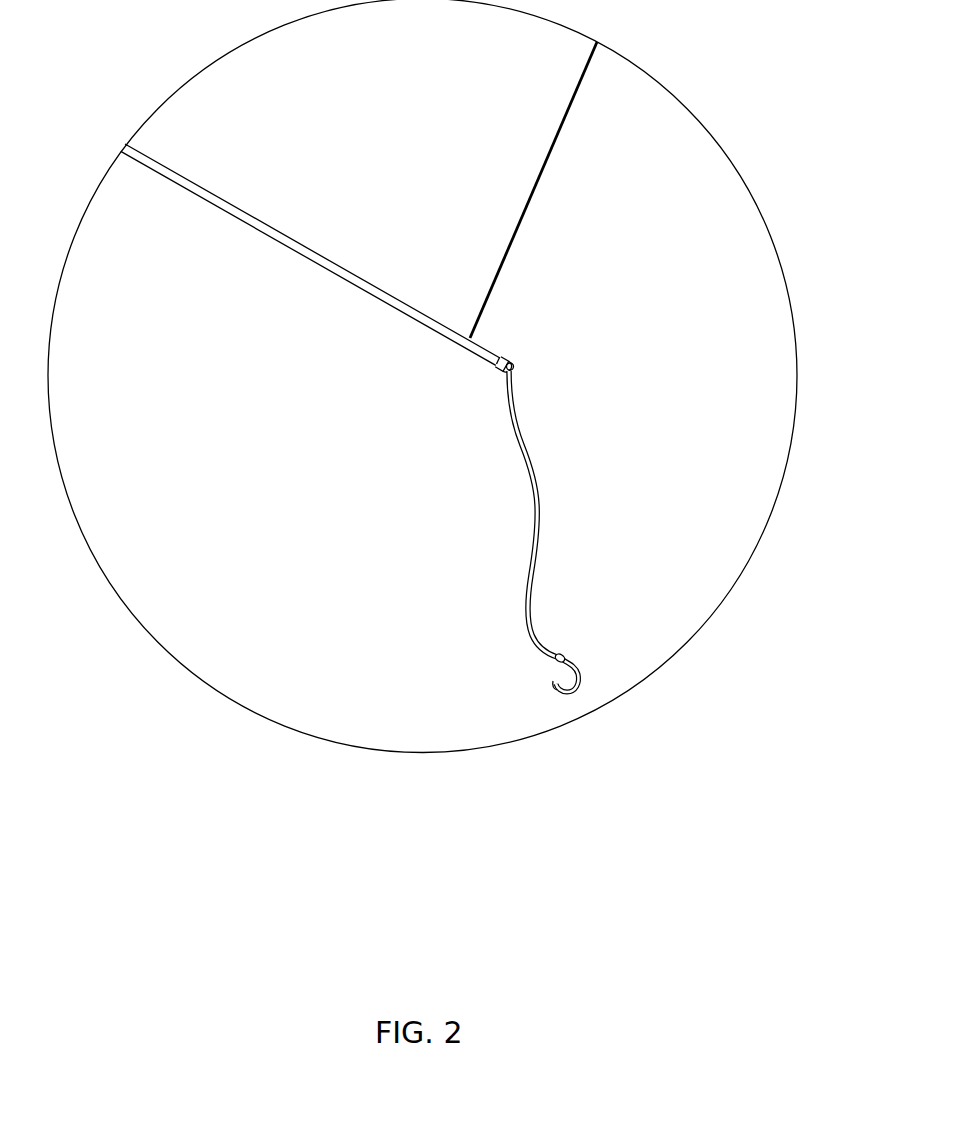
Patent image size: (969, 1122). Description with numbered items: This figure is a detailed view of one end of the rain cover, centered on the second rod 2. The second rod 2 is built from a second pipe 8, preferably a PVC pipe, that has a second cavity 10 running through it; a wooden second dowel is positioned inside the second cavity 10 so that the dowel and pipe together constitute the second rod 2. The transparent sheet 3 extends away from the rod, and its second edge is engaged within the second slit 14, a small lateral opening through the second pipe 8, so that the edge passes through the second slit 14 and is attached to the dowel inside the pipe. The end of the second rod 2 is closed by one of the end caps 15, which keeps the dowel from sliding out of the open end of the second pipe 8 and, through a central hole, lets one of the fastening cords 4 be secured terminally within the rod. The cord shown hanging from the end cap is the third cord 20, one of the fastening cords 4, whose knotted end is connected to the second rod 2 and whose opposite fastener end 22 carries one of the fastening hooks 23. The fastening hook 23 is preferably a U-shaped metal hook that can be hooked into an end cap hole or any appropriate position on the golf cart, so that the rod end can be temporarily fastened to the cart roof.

The second rod 2 is at (310, 274).
The transparent sheet 3 is at (530, 176).
The second pipe 8 is at (404, 313).
The second cavity 10 is at (550, 361).
The second slit 14 is at (483, 333).
The end caps 15 is at (514, 367).
The fastening cords 4 is at (580, 514).
The third cord 20 is at (533, 572).
The fastener end 22 is at (543, 658).
The fastening hooks 23 is at (556, 689).